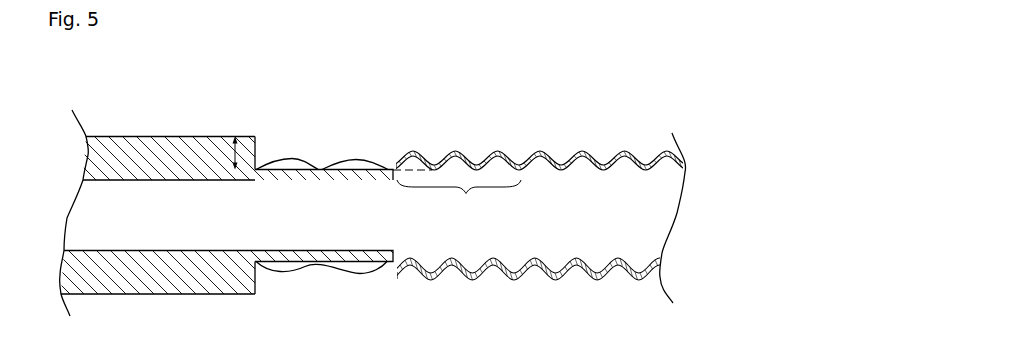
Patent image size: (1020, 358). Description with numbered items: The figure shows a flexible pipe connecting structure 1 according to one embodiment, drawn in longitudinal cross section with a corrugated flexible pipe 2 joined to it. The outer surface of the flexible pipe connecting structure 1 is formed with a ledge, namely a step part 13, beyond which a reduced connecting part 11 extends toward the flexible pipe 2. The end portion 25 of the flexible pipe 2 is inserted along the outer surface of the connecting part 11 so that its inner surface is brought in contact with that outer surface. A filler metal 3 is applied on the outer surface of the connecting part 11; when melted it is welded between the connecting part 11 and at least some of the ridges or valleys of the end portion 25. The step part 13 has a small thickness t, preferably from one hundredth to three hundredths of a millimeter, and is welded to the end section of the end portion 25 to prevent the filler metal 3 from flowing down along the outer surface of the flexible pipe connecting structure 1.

The flexible pipe connecting structure 1 is at (137, 113).
The flexible pipe 2 is at (583, 146).
The filler metal 3 is at (346, 160).
The connecting part 11 is at (362, 178).
The step part 13 is at (252, 163).
The end portion 25 is at (459, 196).
The thickness t is at (230, 137).